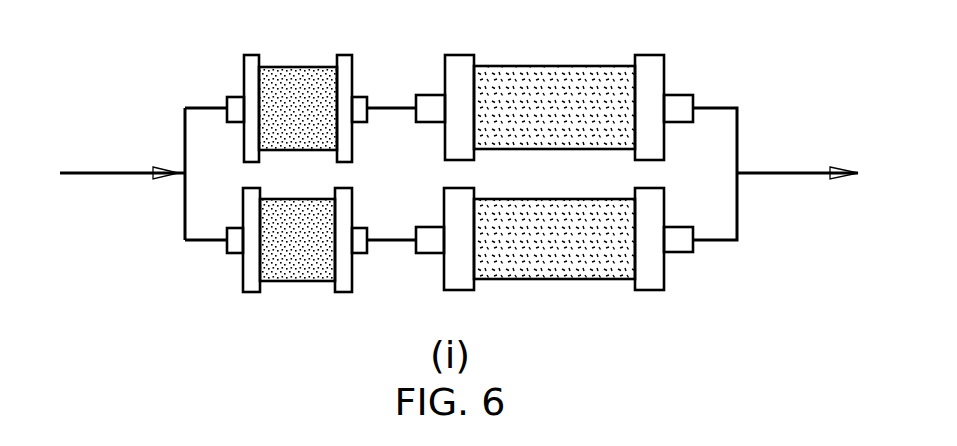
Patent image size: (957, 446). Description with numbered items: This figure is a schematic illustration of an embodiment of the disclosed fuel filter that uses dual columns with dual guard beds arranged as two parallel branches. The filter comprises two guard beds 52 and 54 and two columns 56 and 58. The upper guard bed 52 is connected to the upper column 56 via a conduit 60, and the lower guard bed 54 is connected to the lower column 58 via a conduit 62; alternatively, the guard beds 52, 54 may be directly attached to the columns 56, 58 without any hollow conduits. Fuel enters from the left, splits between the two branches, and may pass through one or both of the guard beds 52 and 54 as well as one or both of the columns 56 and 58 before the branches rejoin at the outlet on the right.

The guard bed 52 is at (295, 67).
The guard bed 54 is at (303, 283).
The column 56 is at (550, 67).
The column 58 is at (560, 280).
The conduit 60 is at (400, 105).
The conduit 62 is at (400, 242).